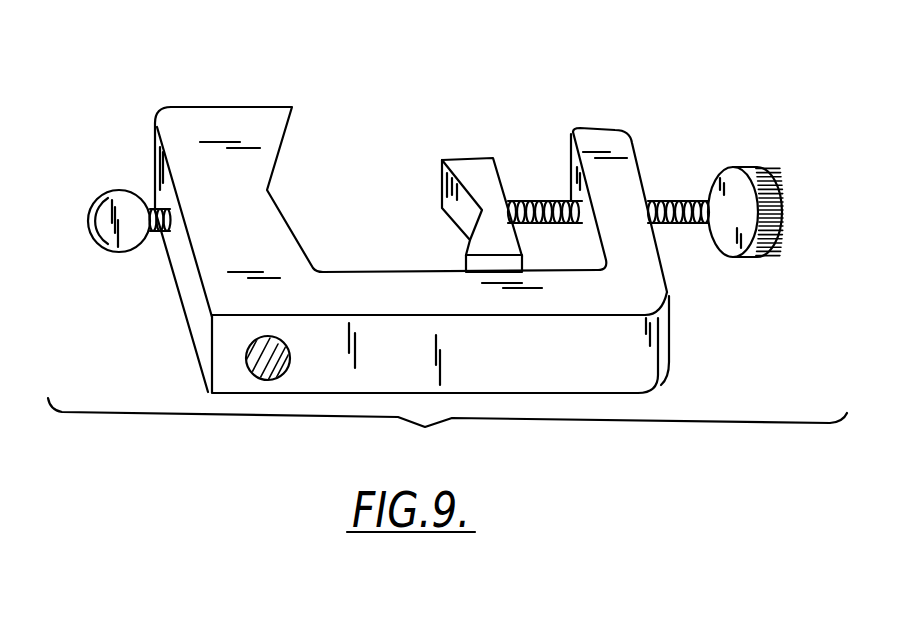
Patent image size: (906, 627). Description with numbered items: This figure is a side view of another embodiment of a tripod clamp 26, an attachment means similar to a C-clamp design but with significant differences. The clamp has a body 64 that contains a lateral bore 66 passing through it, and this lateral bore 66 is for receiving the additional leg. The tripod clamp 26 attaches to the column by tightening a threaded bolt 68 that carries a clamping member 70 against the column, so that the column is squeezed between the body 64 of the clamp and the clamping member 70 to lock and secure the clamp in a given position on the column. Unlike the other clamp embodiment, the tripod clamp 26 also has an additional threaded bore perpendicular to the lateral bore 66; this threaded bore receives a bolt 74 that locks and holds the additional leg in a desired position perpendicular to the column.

The tripod clamp 26 is at (447, 370).
The body 64 is at (230, 123).
The lateral bore 66 is at (265, 350).
The threaded bolt 68 is at (683, 198).
The clamping member 70 is at (465, 162).
The bolt 74 is at (117, 200).